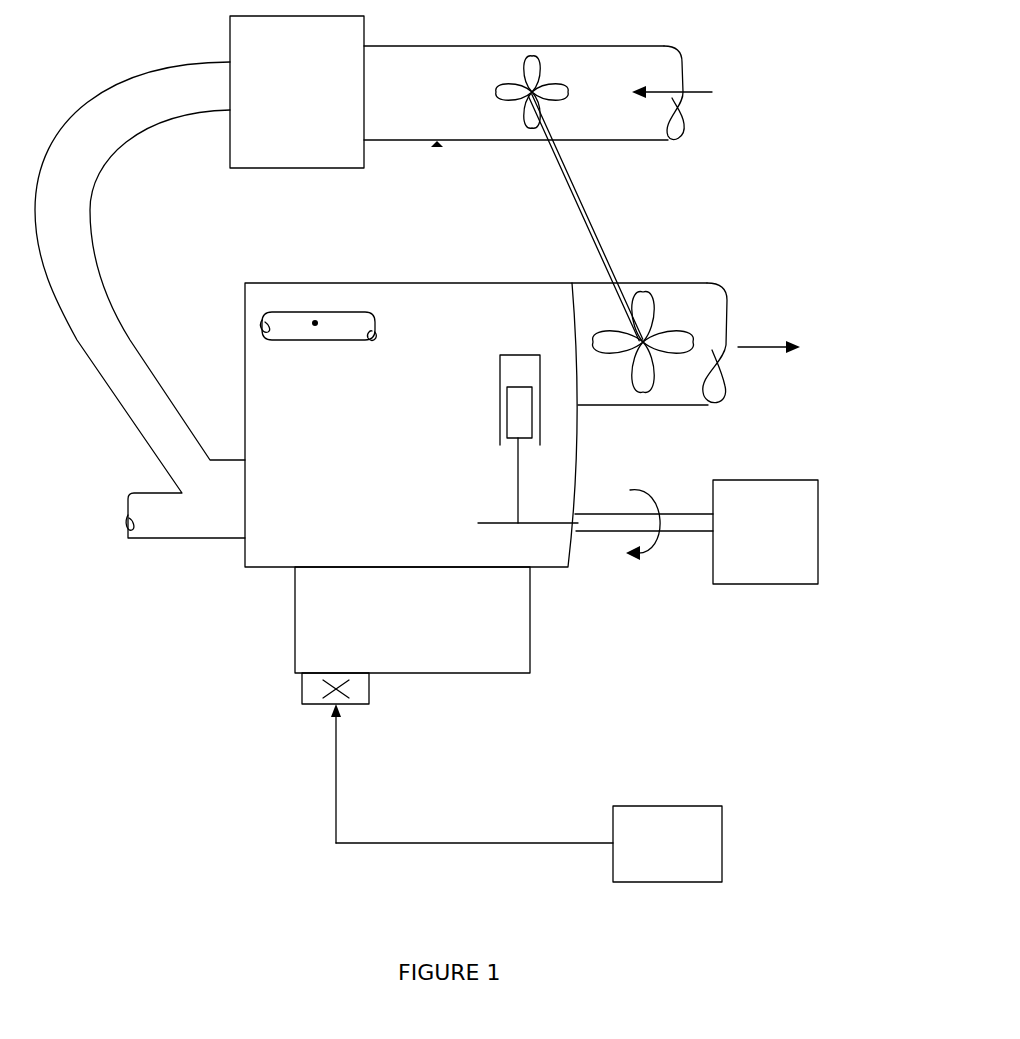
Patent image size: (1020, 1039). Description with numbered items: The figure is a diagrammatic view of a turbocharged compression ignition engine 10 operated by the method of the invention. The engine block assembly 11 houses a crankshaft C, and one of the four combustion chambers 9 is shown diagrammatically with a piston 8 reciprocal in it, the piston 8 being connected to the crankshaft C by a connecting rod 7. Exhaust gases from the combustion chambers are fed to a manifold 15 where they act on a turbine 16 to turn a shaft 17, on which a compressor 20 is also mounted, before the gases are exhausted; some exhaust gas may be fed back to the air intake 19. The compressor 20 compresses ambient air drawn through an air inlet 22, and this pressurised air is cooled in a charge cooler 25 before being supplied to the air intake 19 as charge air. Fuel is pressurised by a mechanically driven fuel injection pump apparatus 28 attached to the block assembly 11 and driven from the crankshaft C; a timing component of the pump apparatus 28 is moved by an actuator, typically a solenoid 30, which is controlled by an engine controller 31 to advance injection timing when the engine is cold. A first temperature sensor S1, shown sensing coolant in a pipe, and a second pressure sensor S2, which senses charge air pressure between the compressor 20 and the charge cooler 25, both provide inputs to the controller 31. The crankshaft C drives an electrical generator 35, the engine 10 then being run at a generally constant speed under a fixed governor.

The connecting rod 7 is at (518, 490).
The piston 8 is at (520, 407).
The combustion chamber 9 is at (500, 414).
The compression ignition engine 10 is at (702, 238).
The engine block assembly 11 is at (238, 574).
The manifold 15 is at (575, 283).
The turbine 16 is at (645, 387).
The shaft 17 is at (590, 215).
The air intake 19 is at (131, 522).
The compressor 20 is at (533, 70).
The air inlet 22 is at (648, 128).
The charge cooler 25 is at (318, 170).
The fuel injection pump apparatus 28 is at (530, 622).
The solenoid 30 is at (358, 705).
The engine controller 31 is at (722, 848).
The electrical generator 35 is at (818, 510).
The first temperature sensor S1 is at (315, 323).
The second pressure sensor S2 is at (437, 146).
The crankshaft C is at (690, 528).